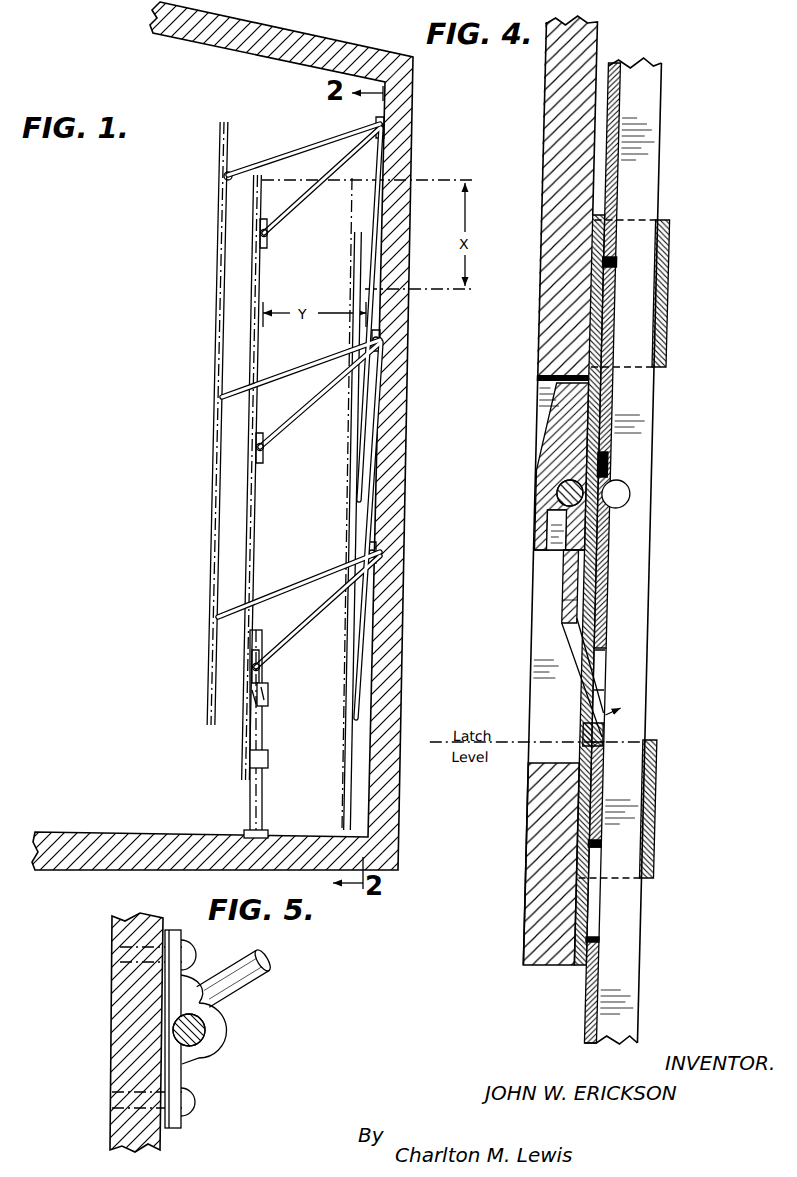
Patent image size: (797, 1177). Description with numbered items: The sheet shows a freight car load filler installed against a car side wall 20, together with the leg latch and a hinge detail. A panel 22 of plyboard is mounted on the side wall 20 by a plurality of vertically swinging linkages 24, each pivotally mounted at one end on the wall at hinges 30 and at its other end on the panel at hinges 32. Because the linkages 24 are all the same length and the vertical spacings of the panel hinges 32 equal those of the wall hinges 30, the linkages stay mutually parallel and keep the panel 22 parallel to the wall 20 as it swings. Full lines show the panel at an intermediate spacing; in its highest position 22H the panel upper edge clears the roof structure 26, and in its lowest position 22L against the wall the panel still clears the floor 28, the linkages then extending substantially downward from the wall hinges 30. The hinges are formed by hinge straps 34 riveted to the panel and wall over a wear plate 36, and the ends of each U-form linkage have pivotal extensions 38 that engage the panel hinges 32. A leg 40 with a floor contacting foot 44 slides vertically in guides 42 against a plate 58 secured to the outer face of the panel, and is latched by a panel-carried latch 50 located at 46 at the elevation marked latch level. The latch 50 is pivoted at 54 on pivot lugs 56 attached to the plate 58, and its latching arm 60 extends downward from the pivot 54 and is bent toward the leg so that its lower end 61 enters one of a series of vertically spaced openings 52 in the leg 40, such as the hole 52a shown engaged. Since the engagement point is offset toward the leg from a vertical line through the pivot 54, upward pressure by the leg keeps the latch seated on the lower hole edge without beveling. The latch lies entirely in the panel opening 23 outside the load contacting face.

In FIG. 1, the side wall 20 is at (400, 378).
In FIG. 1, the panel 22 is at (250, 340).
In FIG. 5, the panel 22 is at (124, 1018).
In FIG. 4, the panel 22 is at (565, 192).
In FIG. 1, the highest panel position 22H is at (209, 568).
In FIG. 1, the lowest panel position 22L is at (363, 521).
In FIG. 4, the panel opening 23 is at (554, 565).
In FIG. 1, the linkages 24 is at (282, 157).
In FIG. 5, the linkages 24 is at (247, 990).
In FIG. 1, the roof structure 26 is at (240, 42).
In FIG. 1, the floor 28 is at (147, 833).
In FIG. 1, the wall hinges 30 is at (388, 120).
In FIG. 1, the panel hinges 32 is at (260, 233).
In FIG. 5, the panel hinges 32 is at (183, 1078).
In FIG. 5, the hinge straps 34 is at (192, 980).
In FIG. 5, the wear plate 36 is at (172, 930).
In FIG. 5, the pivotal extensions 38 is at (205, 1035).
In FIG. 1, the leg 40 is at (265, 795).
In FIG. 4, the leg 40 is at (654, 160).
In FIG. 1, the guides 42 is at (270, 692).
In FIG. 4, the guides 42 is at (675, 247).
In FIG. 1, the foot 44 is at (270, 830).
In FIG. 4, the latch location 46 is at (562, 598).
In FIG. 4, the latch 50 is at (581, 637).
In FIG. 4, the latch engageable openings 52 is at (619, 298).
In FIG. 4, the leg hole 52a is at (617, 680).
In FIG. 4, the pivot 54 is at (566, 490).
In FIG. 4, the pivot lugs 56 is at (549, 462).
In FIG. 4, the plate 58 is at (611, 236).
In FIG. 4, the latching arm 60 is at (585, 665).
In FIG. 4, the lower end 61 is at (623, 726).